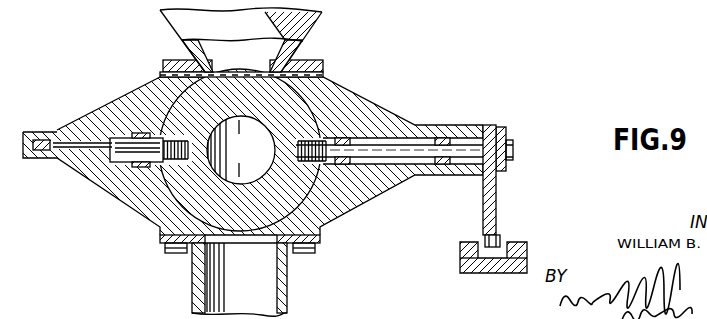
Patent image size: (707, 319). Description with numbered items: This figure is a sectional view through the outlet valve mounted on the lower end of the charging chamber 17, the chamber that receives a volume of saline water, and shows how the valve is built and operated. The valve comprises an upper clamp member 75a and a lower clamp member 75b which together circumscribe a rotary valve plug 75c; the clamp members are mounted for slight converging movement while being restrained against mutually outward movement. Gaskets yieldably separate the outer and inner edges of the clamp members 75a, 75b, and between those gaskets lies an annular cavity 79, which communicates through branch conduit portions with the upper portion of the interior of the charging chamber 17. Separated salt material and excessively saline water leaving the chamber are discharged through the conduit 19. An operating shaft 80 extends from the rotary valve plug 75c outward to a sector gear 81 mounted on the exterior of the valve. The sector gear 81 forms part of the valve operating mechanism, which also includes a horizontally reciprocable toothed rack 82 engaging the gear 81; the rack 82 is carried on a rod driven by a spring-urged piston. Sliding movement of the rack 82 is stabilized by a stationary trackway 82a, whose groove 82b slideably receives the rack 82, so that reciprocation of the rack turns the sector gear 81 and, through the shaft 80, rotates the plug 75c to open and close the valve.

The charging chamber 17 is at (319, 22).
The conduit 19 is at (289, 297).
The upper clamp member 75a is at (348, 110).
The lower clamp member 75b is at (350, 197).
The rotary valve plug 75c is at (172, 112).
The annular cavity 79 is at (78, 150).
The operating shaft 80 is at (398, 147).
The sector gear 81 is at (494, 212).
The toothed rack 82 is at (491, 262).
The stationary trackway 82a is at (522, 273).
The groove 82b is at (481, 275).